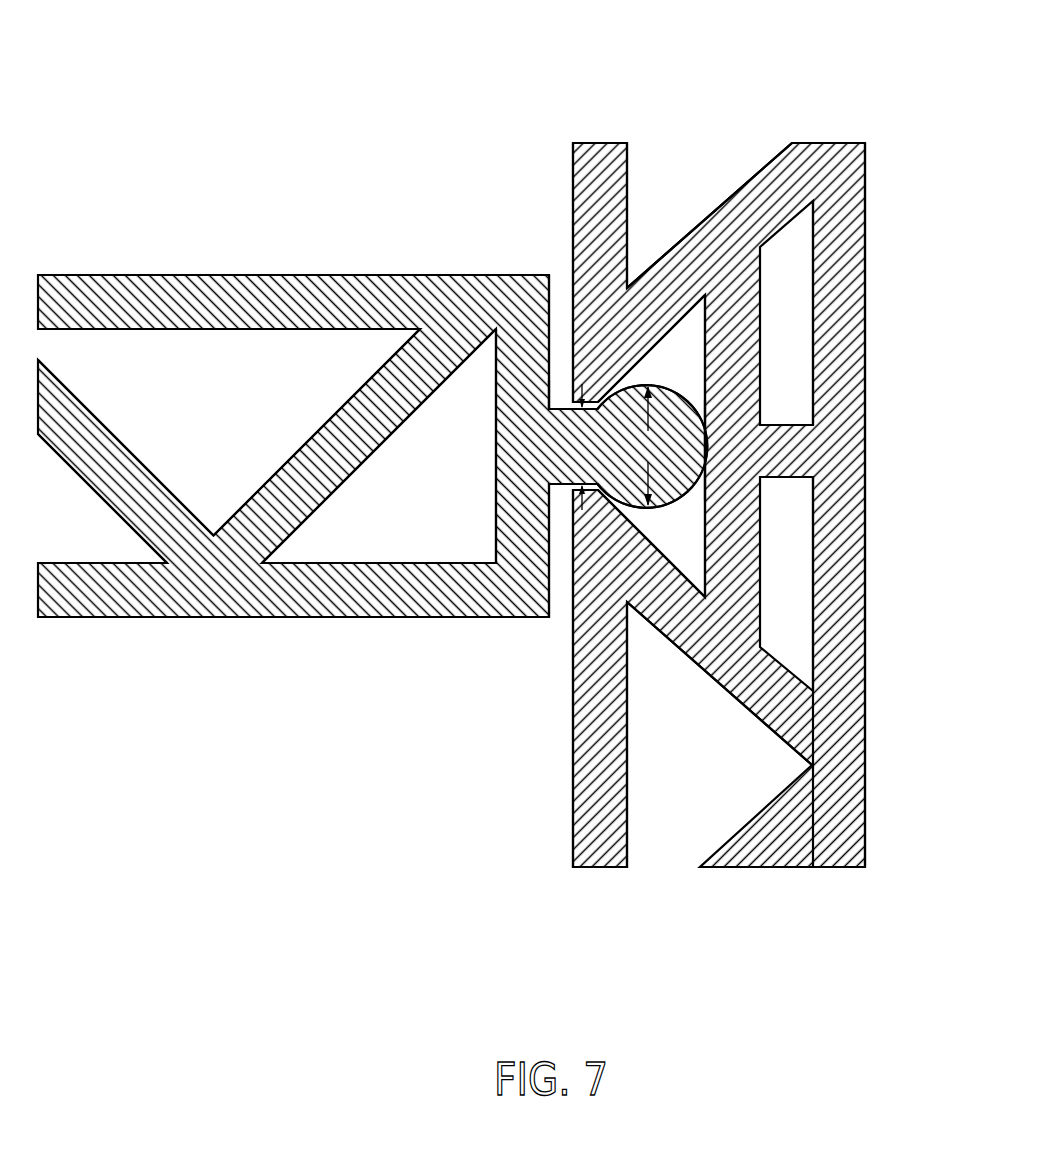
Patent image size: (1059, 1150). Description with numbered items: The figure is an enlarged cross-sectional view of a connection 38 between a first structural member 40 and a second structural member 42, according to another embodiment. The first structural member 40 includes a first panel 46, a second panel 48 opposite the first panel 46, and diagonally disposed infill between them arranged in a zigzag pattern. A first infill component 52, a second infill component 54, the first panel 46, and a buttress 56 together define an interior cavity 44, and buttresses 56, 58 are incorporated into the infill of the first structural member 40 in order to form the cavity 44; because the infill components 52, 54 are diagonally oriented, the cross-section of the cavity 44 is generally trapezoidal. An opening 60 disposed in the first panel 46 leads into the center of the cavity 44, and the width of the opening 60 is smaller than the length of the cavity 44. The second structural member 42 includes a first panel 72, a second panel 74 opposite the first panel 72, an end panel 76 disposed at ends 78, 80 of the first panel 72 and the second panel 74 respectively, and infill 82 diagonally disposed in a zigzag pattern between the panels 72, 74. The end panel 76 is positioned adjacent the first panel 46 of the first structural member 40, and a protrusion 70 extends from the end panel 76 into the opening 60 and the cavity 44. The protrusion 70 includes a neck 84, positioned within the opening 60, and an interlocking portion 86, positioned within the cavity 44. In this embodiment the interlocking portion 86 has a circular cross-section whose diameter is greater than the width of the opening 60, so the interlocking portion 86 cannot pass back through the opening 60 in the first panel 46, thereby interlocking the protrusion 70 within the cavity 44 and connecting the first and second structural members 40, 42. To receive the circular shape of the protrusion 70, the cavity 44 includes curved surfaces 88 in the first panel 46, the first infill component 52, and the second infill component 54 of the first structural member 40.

The connection 38 is at (128, 80).
The first structural member 40 is at (893, 192).
The second structural member 42 is at (256, 268).
The cavity 44 is at (683, 308).
The first panel 46 is at (612, 170).
The second panel 48 is at (848, 318).
The first infill component 52 is at (766, 188).
The second infill component 54 is at (733, 672).
The buttress 56 is at (730, 340).
The buttress 58 is at (790, 440).
The opening 60 is at (562, 394).
The protrusion 70 is at (702, 468).
The first panel 72 is at (386, 300).
The second panel 74 is at (303, 618).
The end panel 76 is at (518, 492).
The end 78 is at (522, 298).
The end 80 is at (521, 618).
The infill 82 is at (284, 478).
The neck 84 is at (560, 436).
The interlocking portion 86 is at (703, 432).
The curved surfaces 88 is at (614, 381).